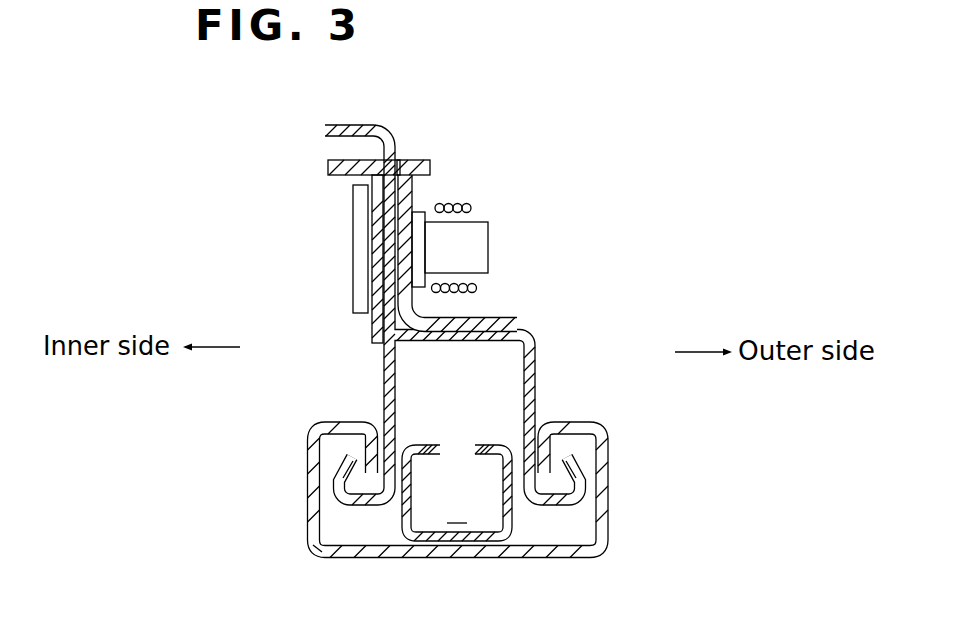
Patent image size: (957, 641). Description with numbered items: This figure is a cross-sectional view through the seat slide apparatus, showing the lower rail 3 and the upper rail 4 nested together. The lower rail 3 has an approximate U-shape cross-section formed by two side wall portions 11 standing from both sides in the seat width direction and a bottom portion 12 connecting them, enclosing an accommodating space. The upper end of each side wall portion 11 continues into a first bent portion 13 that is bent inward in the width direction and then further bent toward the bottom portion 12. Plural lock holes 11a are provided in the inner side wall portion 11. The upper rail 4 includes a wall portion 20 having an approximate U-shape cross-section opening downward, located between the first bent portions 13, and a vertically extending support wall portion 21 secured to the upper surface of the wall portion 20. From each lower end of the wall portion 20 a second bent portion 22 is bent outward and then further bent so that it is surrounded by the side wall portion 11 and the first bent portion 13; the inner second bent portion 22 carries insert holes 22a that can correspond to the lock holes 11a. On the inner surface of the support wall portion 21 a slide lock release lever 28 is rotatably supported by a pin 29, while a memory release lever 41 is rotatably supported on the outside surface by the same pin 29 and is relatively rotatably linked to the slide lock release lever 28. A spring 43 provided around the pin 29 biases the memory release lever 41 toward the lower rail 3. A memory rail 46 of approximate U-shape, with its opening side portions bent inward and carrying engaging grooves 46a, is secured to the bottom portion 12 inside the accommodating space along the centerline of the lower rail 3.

The lower rail 3 is at (322, 570).
The upper rail 4 is at (547, 331).
The side wall portion 11 is at (306, 468).
The lock hole 11a is at (311, 537).
The bottom portion 12 is at (437, 558).
The first bent portion 13 is at (360, 422).
The wall portion 20 is at (535, 352).
The support wall portion 21 is at (398, 140).
The second bent portion 22 is at (311, 440).
The insert hole 22a is at (368, 506).
The slide lock release lever 28 is at (330, 170).
The pin 29 is at (353, 250).
The memory release lever 41 is at (412, 192).
The spring 43 is at (478, 208).
The memory rail 46 is at (515, 527).
The engaging groove 46a is at (477, 447).